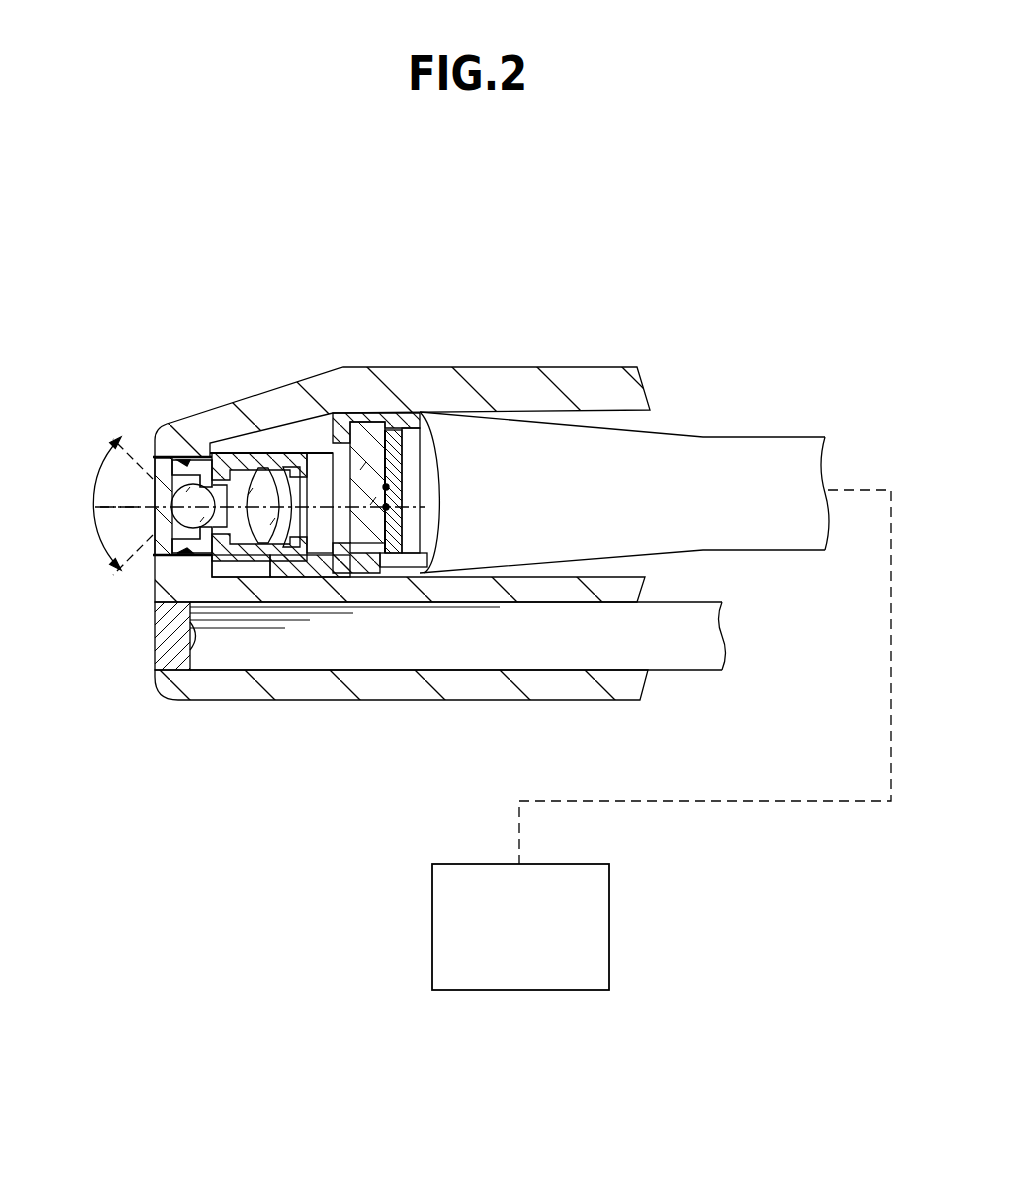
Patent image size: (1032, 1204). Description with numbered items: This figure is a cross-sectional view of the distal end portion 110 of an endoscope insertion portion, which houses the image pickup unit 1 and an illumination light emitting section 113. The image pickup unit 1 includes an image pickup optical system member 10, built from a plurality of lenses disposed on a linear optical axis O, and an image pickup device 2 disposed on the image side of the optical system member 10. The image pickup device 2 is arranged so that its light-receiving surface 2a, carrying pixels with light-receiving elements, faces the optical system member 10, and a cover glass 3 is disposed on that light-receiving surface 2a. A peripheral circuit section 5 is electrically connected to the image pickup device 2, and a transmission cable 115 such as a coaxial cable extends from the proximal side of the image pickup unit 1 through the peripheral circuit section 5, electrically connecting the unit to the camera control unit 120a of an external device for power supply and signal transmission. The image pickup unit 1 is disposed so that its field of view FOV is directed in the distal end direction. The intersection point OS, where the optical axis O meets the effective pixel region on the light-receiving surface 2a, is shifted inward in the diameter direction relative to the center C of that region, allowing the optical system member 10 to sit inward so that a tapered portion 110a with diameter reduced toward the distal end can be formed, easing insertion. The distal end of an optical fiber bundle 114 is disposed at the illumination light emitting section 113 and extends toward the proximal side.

The distal end portion 110 is at (400, 451).
The tapered portion 110a is at (184, 427).
The image pickup unit 1 is at (290, 455).
The image pickup optical system member 10 is at (220, 465).
The cover glass 3 is at (358, 422).
The light-receiving surface 2a is at (386, 430).
The image pickup device 2 is at (396, 432).
The peripheral circuit section 5 is at (410, 432).
The center of the effective pixel region C is at (388, 486).
The intersection point OS is at (388, 507).
The transmission cable 115 is at (782, 432).
The illumination light emitting section 113 is at (155, 657).
The optical fiber bundle 114 is at (710, 672).
The camera control unit 120a is at (432, 925).
The field of view FOV is at (98, 472).
The optical axis O is at (117, 504).